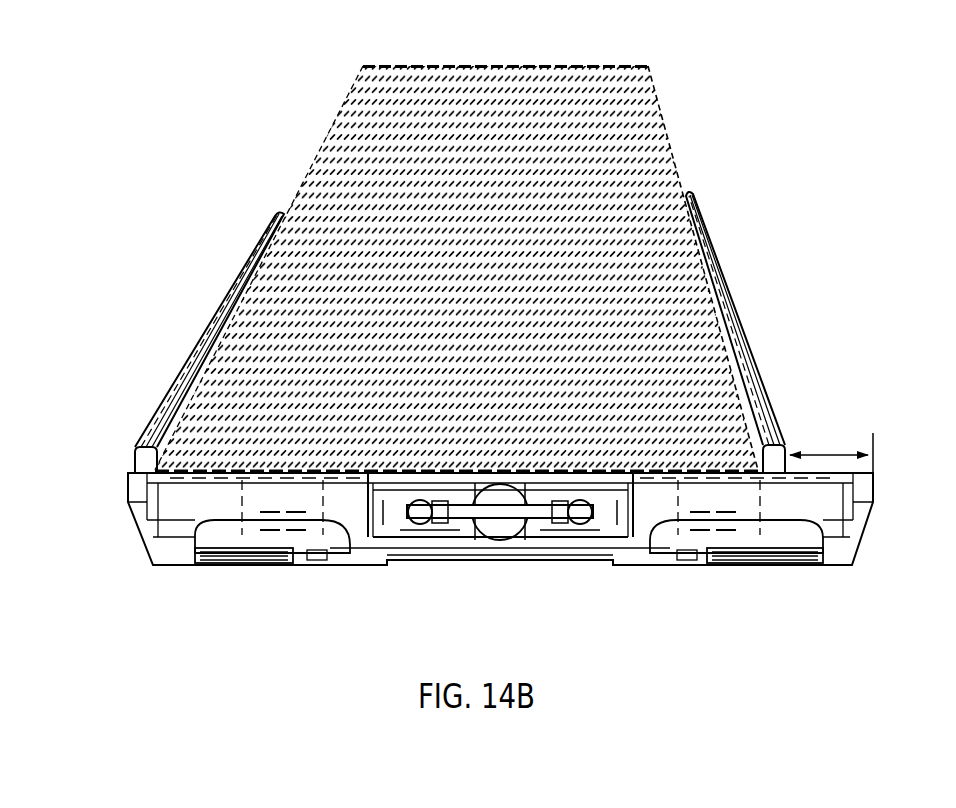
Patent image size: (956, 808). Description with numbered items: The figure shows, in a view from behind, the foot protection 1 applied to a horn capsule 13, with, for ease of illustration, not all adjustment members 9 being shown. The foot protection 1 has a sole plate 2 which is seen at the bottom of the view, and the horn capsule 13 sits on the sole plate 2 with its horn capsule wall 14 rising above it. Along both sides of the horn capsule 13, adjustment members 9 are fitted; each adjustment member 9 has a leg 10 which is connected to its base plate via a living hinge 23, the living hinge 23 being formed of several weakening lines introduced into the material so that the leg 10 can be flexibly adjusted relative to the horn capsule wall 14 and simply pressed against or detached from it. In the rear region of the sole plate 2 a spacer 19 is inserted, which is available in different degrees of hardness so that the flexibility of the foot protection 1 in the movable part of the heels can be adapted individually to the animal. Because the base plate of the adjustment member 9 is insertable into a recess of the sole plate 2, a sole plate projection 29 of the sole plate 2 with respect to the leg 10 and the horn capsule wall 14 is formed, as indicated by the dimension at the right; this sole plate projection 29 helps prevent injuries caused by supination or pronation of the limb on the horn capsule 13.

The foot protection 1 is at (130, 103).
The sole plate 2 is at (698, 492).
The adjustment member 9 is at (212, 270).
The leg 10 is at (208, 342).
The horn capsule 13 is at (372, 148).
The horn capsule wall 14 is at (682, 153).
The spacer 19 is at (495, 510).
The living hinge 23 is at (140, 455).
The sole plate projection 29 is at (831, 441).